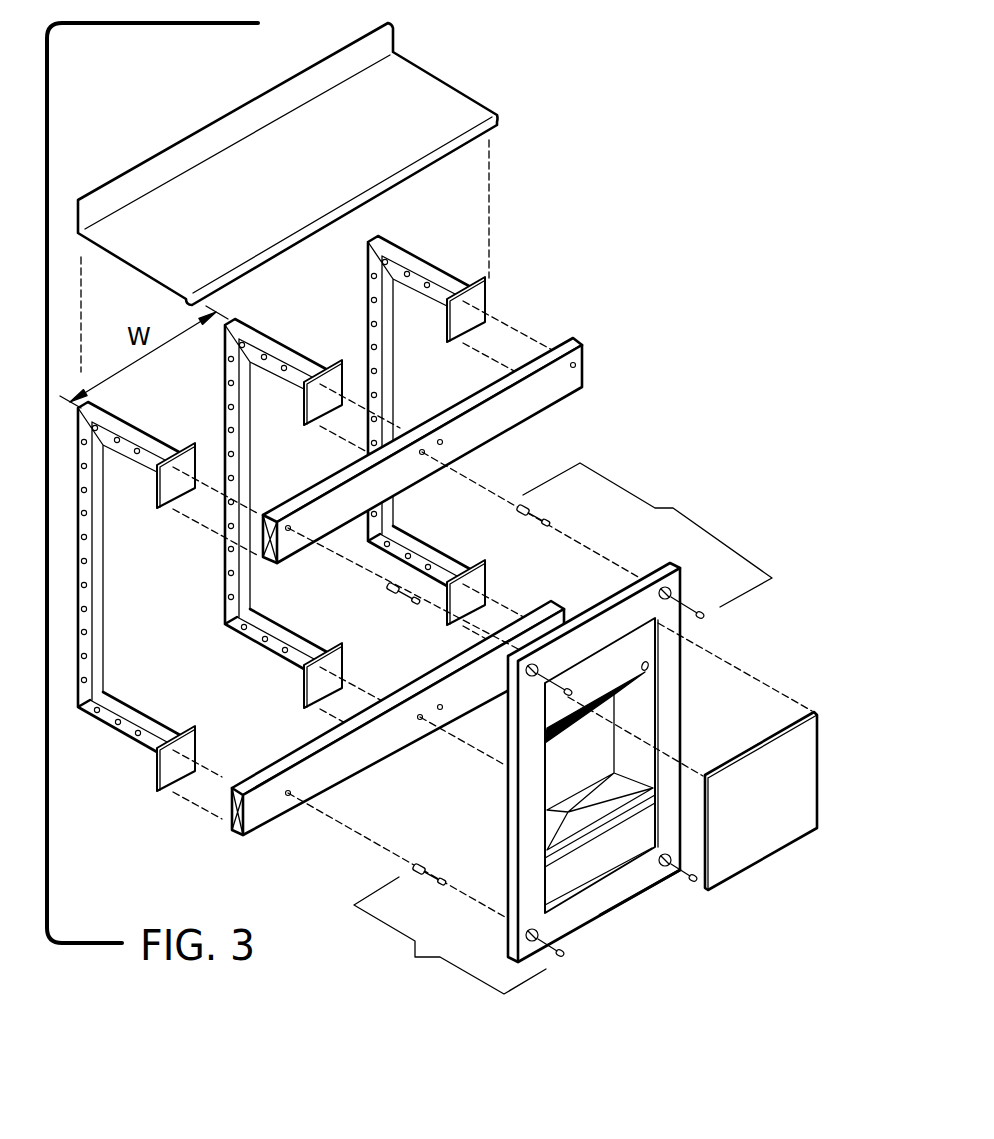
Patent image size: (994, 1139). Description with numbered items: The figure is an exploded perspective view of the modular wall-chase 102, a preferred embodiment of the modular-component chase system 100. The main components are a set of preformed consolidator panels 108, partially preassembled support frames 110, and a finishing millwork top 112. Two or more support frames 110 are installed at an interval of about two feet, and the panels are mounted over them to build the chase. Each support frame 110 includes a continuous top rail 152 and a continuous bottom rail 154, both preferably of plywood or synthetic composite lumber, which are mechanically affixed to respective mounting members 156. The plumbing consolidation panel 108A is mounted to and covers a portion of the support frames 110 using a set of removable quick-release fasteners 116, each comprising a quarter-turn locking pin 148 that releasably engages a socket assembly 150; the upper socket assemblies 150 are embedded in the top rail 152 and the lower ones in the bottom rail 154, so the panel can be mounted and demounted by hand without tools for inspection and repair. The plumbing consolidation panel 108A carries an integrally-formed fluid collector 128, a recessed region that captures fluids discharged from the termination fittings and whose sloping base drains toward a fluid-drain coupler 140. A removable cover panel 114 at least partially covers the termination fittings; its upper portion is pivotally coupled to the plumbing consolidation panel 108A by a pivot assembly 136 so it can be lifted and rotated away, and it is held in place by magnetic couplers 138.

The modular-component chase system 100 is at (628, 265).
The modular wall-chase 102 is at (693, 282).
The preformed consolidator panels 108 is at (593, 772).
The plumbing consolidation panel 108A is at (635, 903).
The partially preassembled support frames 110 is at (423, 541).
The finishing millwork top 112 is at (413, 80).
The removable cover panel 114 is at (762, 804).
The quick-release fasteners 116 is at (673, 508).
The fluid collector 128 is at (632, 715).
The pivot assembly 136 is at (750, 753).
The magnetic couplers 138 is at (648, 668).
The fluid-drain coupler 140 is at (568, 812).
The quarter-turn locking pin 148 is at (708, 615).
The socket assembly 150 is at (530, 510).
The top rail 152 is at (583, 378).
The bottom rail 154 is at (243, 835).
The mounting member 156 is at (452, 345).